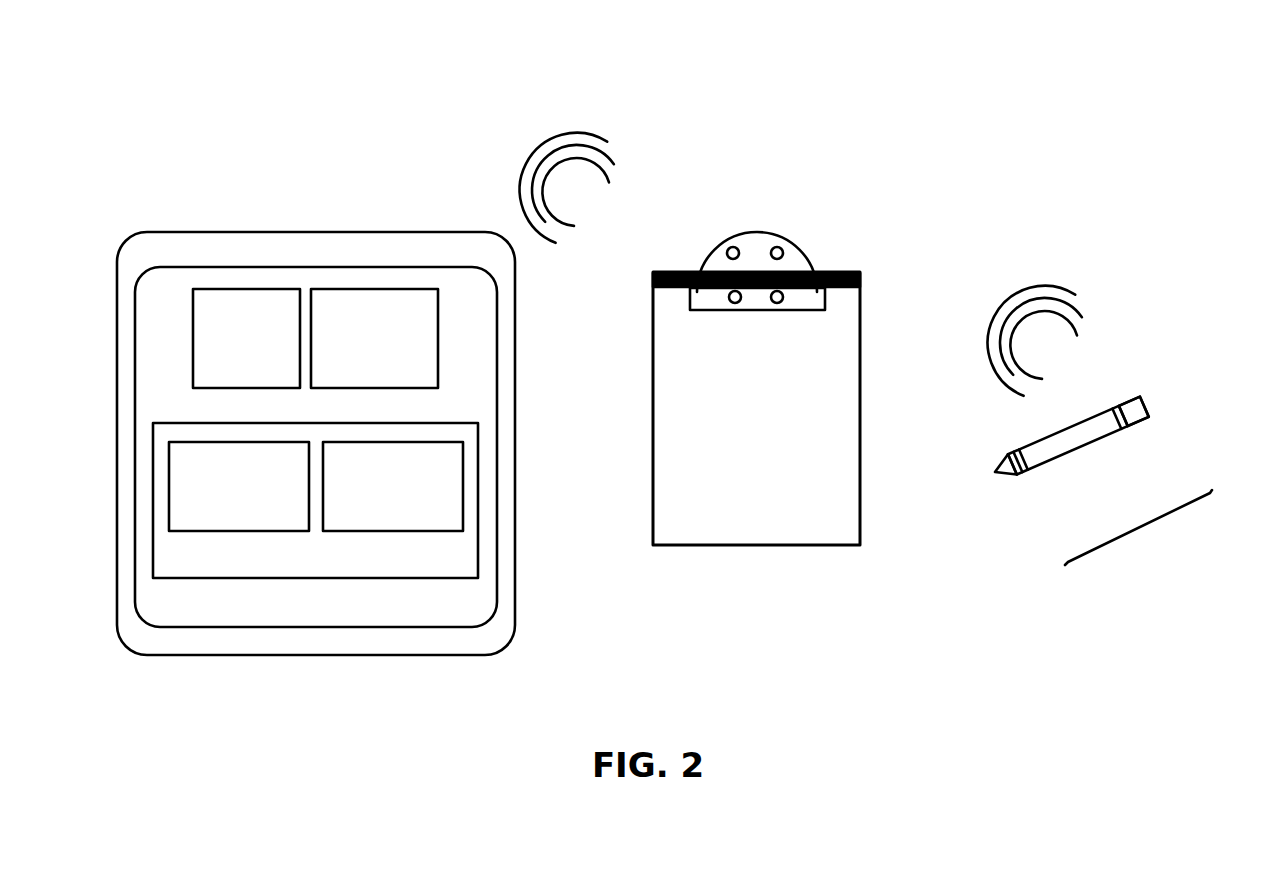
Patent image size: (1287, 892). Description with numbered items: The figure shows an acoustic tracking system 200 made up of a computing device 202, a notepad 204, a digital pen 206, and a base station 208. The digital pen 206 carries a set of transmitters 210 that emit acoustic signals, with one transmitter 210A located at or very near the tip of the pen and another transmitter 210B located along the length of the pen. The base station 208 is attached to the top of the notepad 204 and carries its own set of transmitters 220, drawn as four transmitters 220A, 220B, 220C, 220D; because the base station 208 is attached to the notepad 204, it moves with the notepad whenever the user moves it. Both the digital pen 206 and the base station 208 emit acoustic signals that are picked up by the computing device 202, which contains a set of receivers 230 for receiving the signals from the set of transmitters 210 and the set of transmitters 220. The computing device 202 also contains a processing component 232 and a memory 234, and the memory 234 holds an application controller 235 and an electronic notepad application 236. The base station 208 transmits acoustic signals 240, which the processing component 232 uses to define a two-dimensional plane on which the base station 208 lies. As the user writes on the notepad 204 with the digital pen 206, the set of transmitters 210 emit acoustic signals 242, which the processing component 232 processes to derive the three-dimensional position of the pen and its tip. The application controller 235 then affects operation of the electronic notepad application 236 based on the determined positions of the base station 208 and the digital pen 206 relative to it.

The acoustic tracking system 200 is at (183, 151).
The computing device 202 is at (316, 421).
The notepad 204 is at (814, 408).
The digital pen 206 is at (1119, 414).
The base station 208 is at (775, 224).
The set of transmitters 210 is at (1138, 534).
The transmitter 210A is at (1009, 466).
The transmitter 210B is at (1149, 379).
The set of transmitters 220 is at (792, 250).
The transmitter 220A is at (675, 233).
The transmitter 220B is at (840, 233).
The transmitter 220C is at (675, 274).
The transmitter 220D is at (841, 274).
The set of receivers 230 is at (246, 338).
The processing component 232 is at (374, 338).
The memory 234 is at (315, 500).
The application controller 235 is at (239, 486).
The electronic notepad application 236 is at (393, 486).
The acoustic signals 240 is at (612, 164).
The acoustic signals 242 is at (1082, 318).